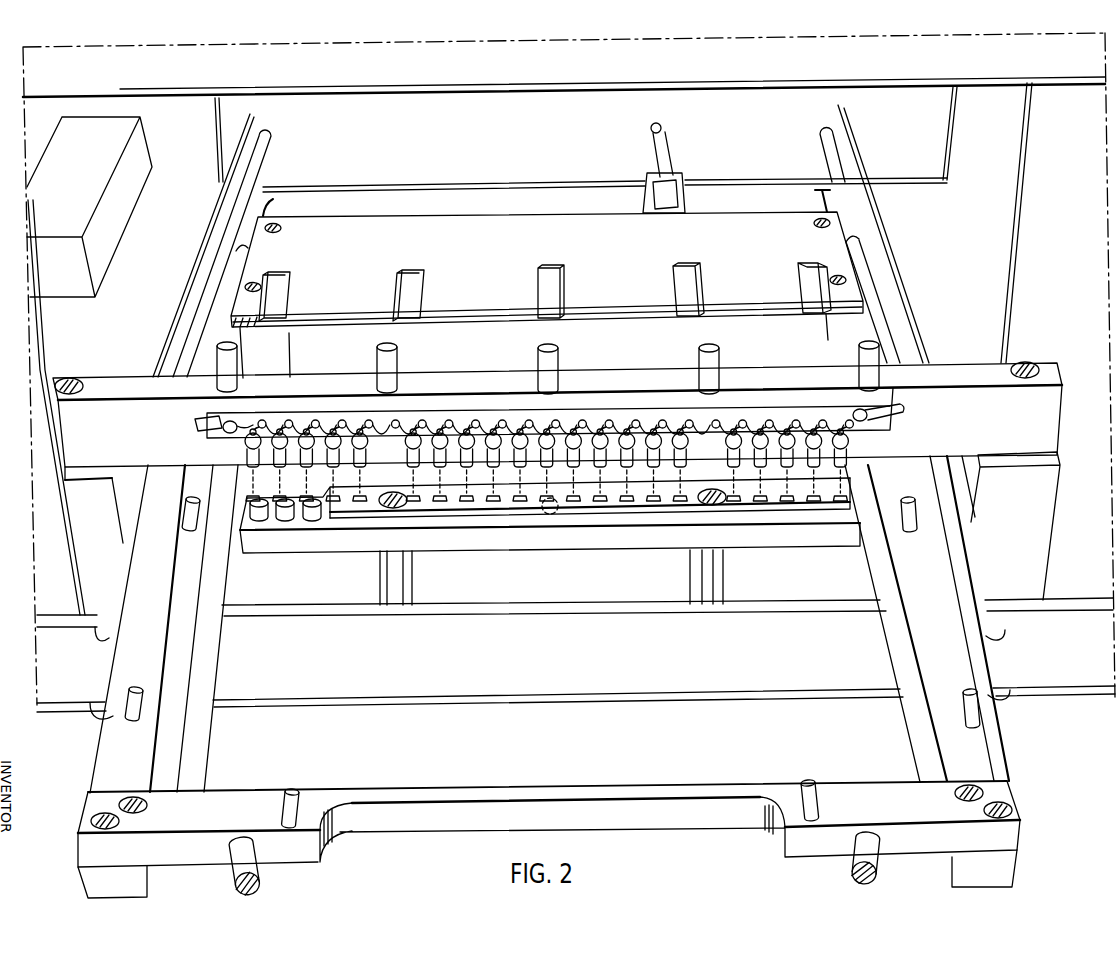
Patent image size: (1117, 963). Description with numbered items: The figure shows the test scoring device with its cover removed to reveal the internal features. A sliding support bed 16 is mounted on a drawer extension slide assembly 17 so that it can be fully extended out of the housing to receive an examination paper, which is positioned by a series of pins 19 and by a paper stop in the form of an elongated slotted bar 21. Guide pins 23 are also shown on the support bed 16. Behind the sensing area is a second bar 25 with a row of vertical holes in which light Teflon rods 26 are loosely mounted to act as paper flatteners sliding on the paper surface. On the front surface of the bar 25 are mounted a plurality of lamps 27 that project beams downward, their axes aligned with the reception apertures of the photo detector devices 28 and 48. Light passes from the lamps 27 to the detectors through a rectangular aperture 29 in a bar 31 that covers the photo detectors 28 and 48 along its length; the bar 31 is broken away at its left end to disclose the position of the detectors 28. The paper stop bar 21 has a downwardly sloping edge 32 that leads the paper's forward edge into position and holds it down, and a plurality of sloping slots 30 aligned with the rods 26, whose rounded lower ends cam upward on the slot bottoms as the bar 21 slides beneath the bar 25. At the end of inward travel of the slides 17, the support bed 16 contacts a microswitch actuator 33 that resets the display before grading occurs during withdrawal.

The sliding support bed 16 is at (115, 752).
The drawer extension slide assembly 17 is at (108, 662).
The positioning pins 19 is at (980, 710).
The paper stop bar 21 is at (349, 291).
The guide pins 23 is at (258, 878).
The second bar 25 is at (133, 389).
The paper flattening rods 26 is at (380, 356).
The lamps 27 is at (248, 461).
The photo detector devices 28 is at (284, 518).
The rectangular aperture 29 is at (332, 490).
The sloping slots 30 is at (414, 297).
The bar covering the photo detectors 31 is at (430, 523).
The downwardly sloping edge 32 is at (445, 318).
The microswitch actuator 33 is at (668, 132).
The photo detector device 48 is at (558, 513).